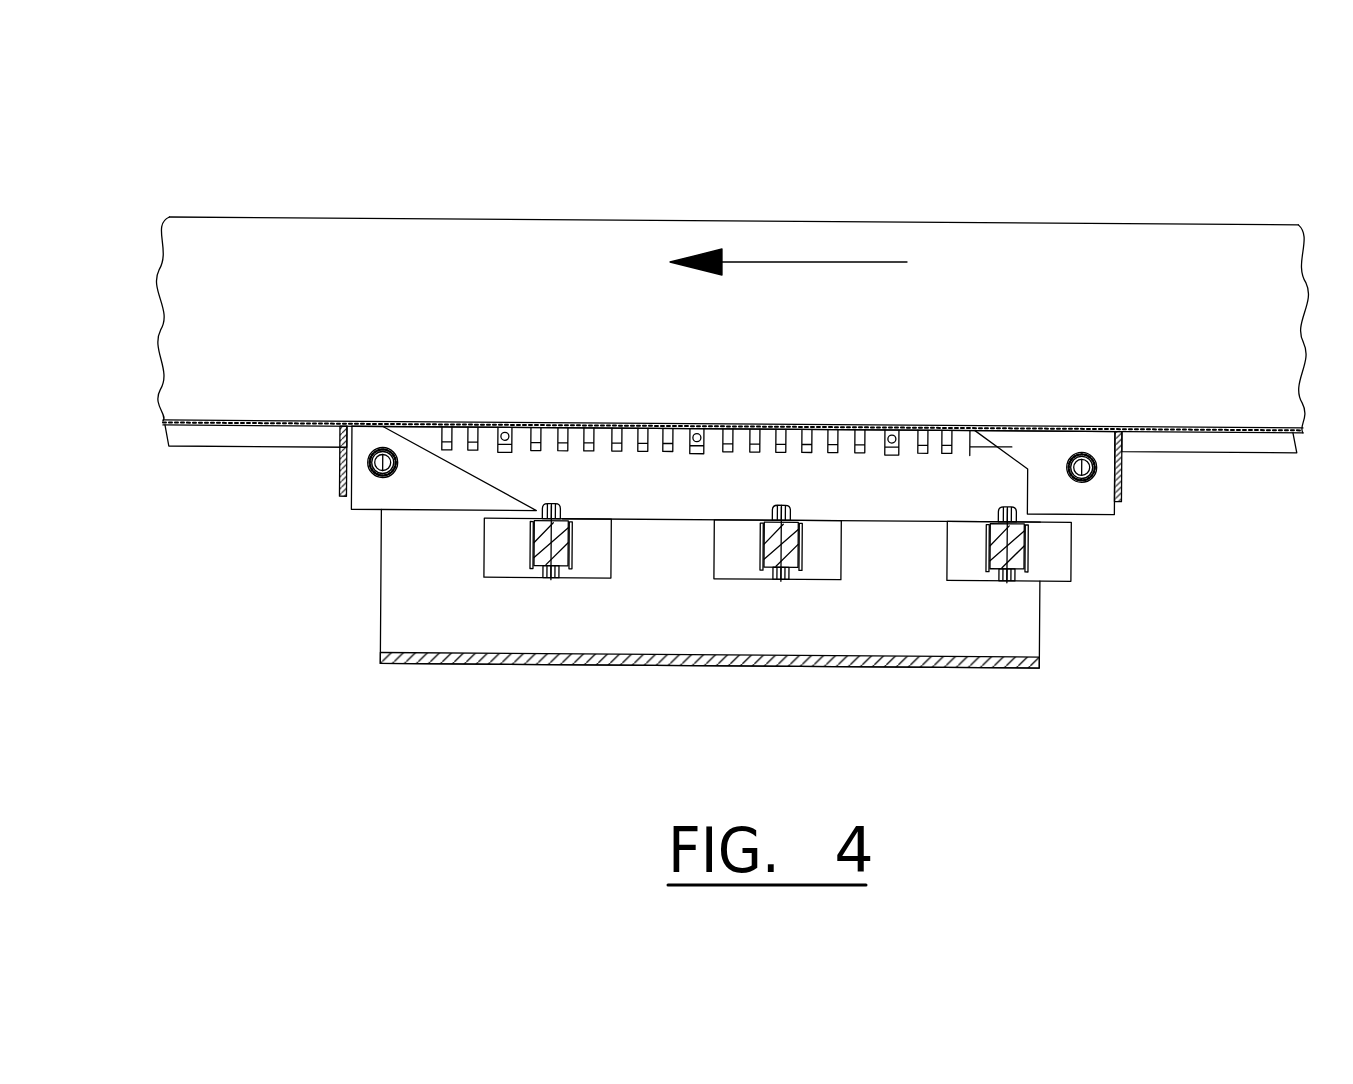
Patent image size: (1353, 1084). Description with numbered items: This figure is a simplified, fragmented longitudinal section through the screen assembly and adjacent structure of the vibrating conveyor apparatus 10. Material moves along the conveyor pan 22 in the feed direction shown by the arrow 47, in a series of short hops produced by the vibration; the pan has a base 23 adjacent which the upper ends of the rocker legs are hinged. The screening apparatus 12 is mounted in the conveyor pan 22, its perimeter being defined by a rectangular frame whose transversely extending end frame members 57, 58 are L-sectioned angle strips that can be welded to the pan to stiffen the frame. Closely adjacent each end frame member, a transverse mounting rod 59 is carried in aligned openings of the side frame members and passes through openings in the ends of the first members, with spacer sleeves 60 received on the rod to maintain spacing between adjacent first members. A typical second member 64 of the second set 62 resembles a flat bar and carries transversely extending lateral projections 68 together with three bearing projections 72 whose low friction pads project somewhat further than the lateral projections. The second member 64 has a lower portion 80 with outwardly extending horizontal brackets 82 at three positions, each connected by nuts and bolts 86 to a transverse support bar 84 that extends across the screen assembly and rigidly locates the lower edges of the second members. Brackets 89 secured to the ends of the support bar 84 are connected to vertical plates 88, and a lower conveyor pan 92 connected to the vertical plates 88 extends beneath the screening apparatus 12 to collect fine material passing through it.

The apparatus 10 is at (980, 168).
The screening apparatus 12 is at (908, 346).
The conveyor pan 22 is at (243, 262).
The base of the pan 23 is at (195, 425).
The feed direction arrow 47 is at (808, 262).
The end frame member 57 is at (345, 468).
The end frame member 58 is at (1125, 468).
The transverse mounting rod 59 is at (383, 473).
The spacer sleeve 60 is at (397, 467).
The second set of members 62 is at (983, 402).
The second member 64 is at (983, 402).
The lateral projections 68 is at (475, 425).
The bearing projections 72 is at (505, 425).
The lower portion 80 is at (683, 518).
The horizontal brackets 82 is at (568, 523).
The transverse support bar 84 is at (552, 567).
The nuts and bolts 86 is at (545, 512).
The vertical plates 88 is at (583, 562).
The brackets 89 is at (527, 548).
The lower conveyor pan 92 is at (405, 665).